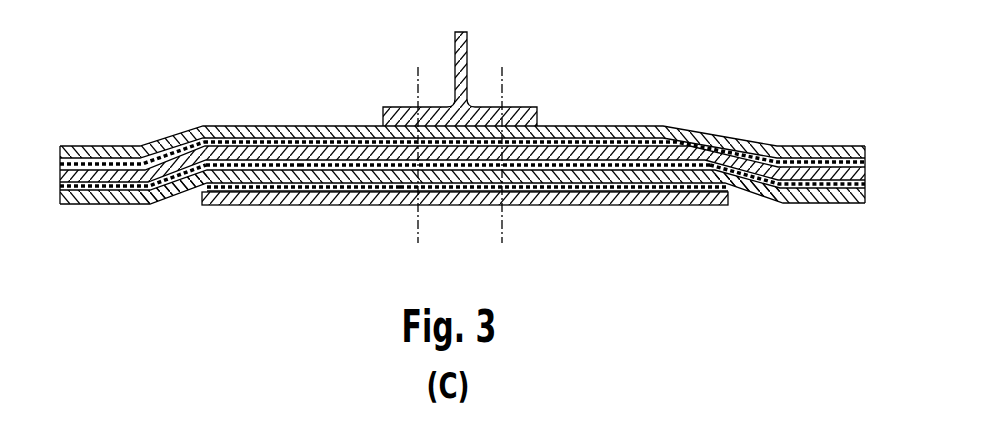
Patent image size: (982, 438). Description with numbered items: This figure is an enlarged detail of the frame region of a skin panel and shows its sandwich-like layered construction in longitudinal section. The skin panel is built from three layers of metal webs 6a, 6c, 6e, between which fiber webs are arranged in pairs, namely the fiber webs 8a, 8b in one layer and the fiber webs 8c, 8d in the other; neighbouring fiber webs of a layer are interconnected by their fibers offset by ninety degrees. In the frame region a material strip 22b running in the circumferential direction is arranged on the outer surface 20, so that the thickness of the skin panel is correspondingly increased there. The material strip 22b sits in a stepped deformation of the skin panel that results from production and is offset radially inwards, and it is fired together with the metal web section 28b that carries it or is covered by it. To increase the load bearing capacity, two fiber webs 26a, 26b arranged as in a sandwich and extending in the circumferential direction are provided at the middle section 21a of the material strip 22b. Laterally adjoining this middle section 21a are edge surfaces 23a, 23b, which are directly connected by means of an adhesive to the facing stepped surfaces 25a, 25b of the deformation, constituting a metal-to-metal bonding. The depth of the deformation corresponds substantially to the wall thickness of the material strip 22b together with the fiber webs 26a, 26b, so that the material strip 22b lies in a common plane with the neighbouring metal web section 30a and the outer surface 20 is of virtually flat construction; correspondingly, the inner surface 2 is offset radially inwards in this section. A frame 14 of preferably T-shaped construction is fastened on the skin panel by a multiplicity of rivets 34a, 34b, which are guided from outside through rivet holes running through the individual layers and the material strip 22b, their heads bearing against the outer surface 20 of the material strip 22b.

The inner surface 2 is at (678, 123).
The frame 14 is at (460, 60).
The metal web 6a is at (805, 150).
The metal web 6c is at (838, 172).
The metal web 6e is at (833, 190).
The fiber web 8a is at (83, 157).
The fiber web 8b is at (122, 160).
The fiber web 8c is at (215, 168).
The fiber web 8d is at (265, 168).
The outer surface 20 is at (112, 220).
The middle section 21a is at (463, 203).
The material strip 22b is at (337, 203).
The edge surface 23a is at (193, 190).
The edge surface 23b is at (743, 188).
The stepped surface 25a is at (247, 190).
The stepped surface 25b is at (675, 195).
The fiber web 26a is at (525, 203).
The fiber web 26b is at (598, 203).
The metal web section 28b is at (388, 203).
The metal web section 30a is at (133, 203).
The rivet 34a is at (417, 72).
The rivet 34b is at (503, 72).